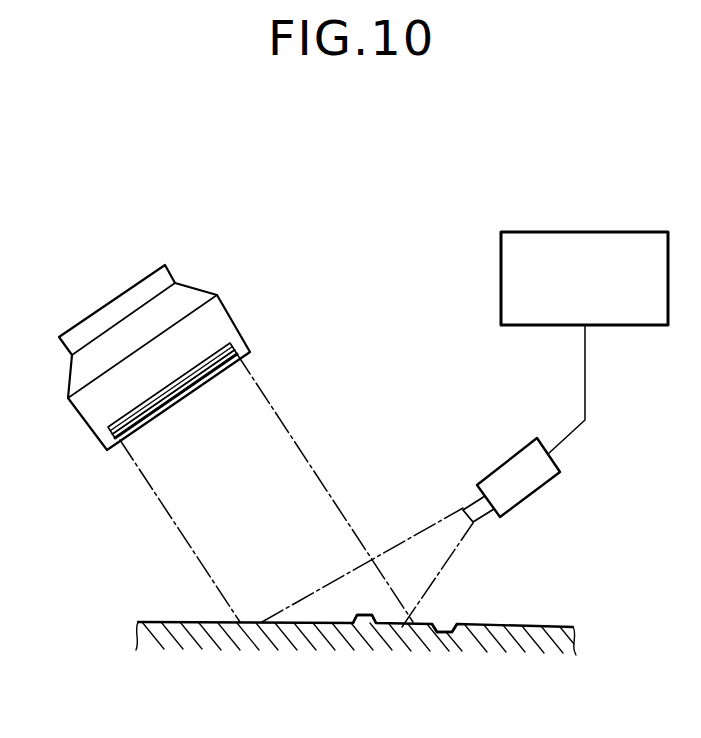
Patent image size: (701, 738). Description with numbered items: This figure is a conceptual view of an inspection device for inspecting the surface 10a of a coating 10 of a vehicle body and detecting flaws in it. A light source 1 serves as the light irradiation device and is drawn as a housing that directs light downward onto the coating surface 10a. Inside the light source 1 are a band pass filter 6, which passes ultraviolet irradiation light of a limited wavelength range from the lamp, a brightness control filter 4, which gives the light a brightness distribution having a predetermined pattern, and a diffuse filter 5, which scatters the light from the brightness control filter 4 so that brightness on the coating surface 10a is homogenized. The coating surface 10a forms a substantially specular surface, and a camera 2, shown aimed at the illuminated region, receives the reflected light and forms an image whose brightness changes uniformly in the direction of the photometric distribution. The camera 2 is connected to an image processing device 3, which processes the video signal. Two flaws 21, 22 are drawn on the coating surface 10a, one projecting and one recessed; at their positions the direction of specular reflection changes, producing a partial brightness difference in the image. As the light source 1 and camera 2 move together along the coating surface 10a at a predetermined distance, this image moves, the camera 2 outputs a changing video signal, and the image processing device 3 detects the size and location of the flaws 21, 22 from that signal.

The light source 1 is at (125, 300).
The camera 2 is at (522, 475).
The image processing device 3 is at (595, 232).
The brightness control filter 4 is at (217, 345).
The diffuse filter 5 is at (218, 342).
The band pass filter 6 is at (196, 368).
The coating 10 is at (555, 627).
The coating surface 10a is at (518, 627).
The flaw 21 is at (366, 609).
The flaw 22 is at (448, 622).